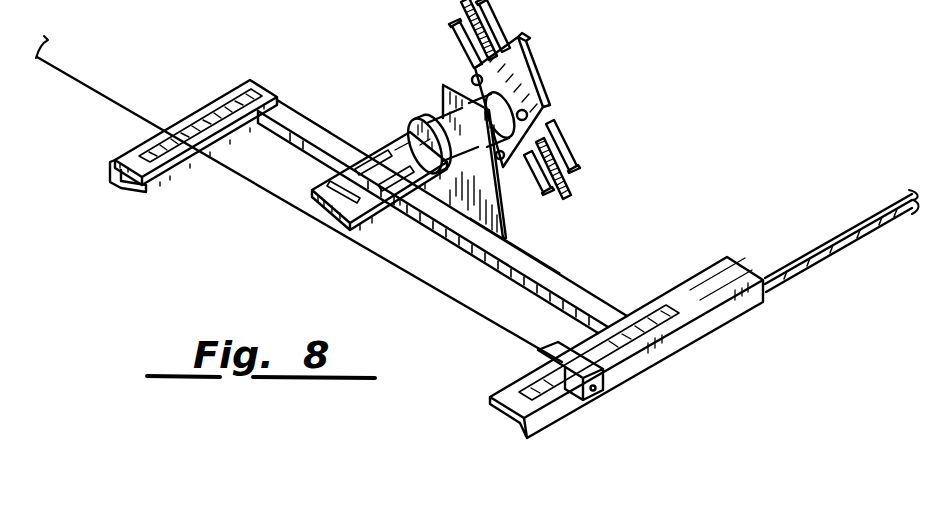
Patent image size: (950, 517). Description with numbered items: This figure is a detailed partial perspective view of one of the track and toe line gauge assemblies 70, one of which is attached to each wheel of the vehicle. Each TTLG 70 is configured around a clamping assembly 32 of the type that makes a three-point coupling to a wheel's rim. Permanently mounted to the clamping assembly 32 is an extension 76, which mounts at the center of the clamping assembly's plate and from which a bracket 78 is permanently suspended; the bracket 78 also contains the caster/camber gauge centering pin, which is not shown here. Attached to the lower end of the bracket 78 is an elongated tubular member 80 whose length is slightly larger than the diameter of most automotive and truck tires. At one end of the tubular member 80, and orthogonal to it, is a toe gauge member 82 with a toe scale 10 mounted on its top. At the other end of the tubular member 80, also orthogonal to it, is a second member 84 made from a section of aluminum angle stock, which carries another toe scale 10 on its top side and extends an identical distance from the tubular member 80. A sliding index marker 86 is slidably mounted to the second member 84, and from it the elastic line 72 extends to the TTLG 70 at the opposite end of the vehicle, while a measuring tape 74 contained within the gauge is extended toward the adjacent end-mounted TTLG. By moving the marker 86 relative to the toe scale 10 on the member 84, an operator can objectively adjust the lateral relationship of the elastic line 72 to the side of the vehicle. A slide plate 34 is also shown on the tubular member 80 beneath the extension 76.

The toe scale 10 is at (163, 155).
The clamping assembly 32 is at (561, 110).
The slotted slide plate 34 is at (375, 212).
The track and toe line gauge assembly 70 is at (568, 244).
The elastic line 72 is at (87, 76).
The measuring tape 74 is at (840, 254).
The extension 76 is at (468, 90).
The bracket 78 is at (502, 218).
The elongated tubular member 80 is at (577, 298).
The toe gauge member 82 is at (108, 172).
The second member 84 is at (693, 333).
The sliding index marker 86 is at (565, 359).